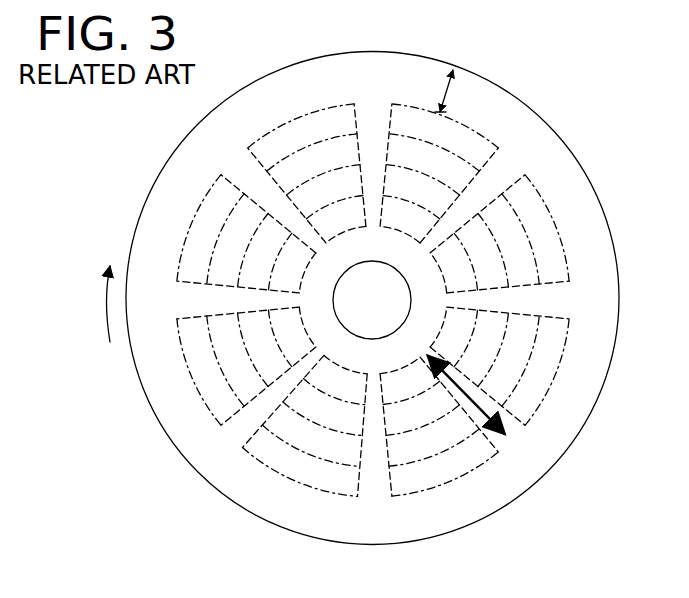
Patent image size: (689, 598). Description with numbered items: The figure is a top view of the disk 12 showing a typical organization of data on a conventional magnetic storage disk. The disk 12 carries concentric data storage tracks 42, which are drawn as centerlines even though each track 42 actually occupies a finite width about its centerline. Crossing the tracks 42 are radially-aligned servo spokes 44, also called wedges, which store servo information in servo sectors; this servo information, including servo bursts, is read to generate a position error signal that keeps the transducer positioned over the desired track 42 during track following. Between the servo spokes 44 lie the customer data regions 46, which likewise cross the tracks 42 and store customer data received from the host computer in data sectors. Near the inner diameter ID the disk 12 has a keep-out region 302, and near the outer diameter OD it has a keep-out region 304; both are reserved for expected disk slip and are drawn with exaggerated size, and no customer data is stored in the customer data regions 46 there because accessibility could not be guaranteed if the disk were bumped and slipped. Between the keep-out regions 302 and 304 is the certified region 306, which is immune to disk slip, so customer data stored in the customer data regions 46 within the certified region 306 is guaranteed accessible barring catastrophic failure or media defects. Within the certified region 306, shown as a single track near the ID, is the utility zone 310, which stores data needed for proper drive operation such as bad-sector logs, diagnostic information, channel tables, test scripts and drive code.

The disk 12 is at (146, 158).
The servo spokes 44 is at (372, 117).
The customer data regions 46 is at (532, 162).
The data storage tracks 42 is at (497, 358).
The keep-out region 302 is at (394, 232).
The keep-out region 304 is at (447, 92).
The certified region 306 is at (497, 417).
The utility zone 310 is at (297, 322).
The inner diameter ID is at (343, 323).
The outer diameter OD is at (559, 141).